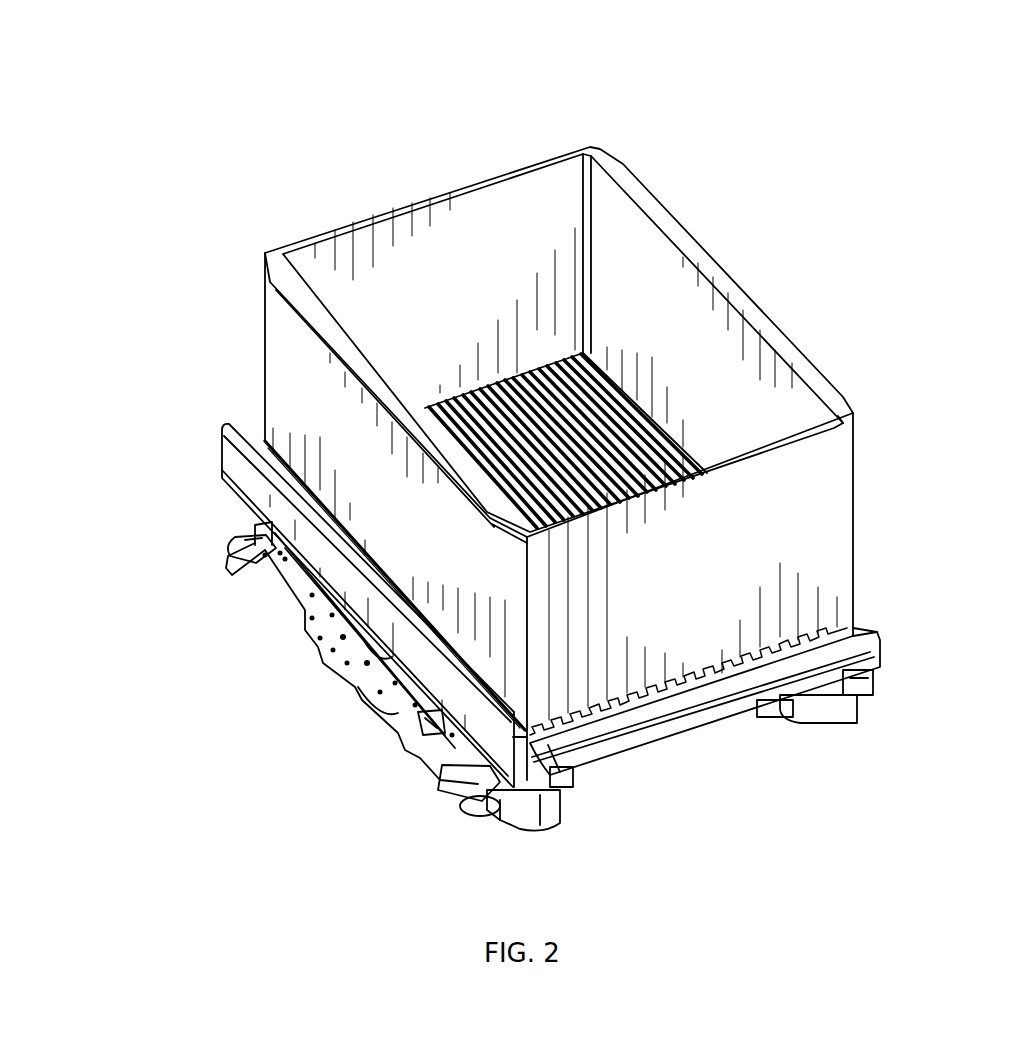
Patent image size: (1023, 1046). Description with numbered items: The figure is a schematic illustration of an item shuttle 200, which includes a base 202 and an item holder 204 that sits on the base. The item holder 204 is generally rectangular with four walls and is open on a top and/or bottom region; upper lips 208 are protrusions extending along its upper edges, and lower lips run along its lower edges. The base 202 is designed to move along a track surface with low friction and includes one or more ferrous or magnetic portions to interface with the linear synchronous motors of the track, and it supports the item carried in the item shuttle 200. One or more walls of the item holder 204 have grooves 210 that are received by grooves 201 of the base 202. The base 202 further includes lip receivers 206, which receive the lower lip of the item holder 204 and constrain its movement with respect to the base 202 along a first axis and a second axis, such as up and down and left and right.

The item shuttle 200 is at (212, 98).
The grooves 201 is at (556, 380).
The base 202 is at (228, 556).
The item holder 204 is at (857, 487).
The lip receivers 206 is at (247, 460).
The upper lips 208 is at (706, 253).
The grooves 210 is at (800, 633).